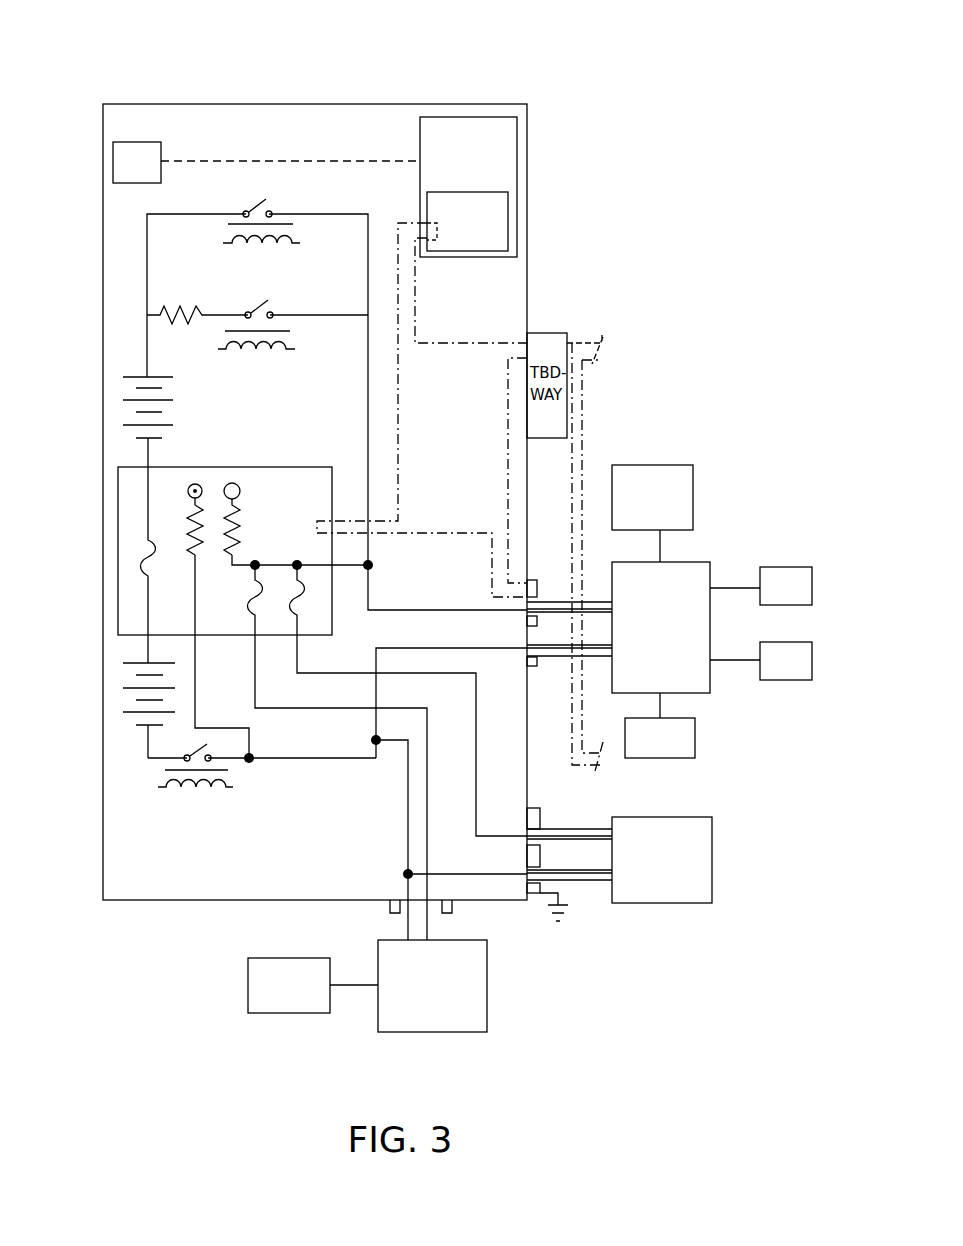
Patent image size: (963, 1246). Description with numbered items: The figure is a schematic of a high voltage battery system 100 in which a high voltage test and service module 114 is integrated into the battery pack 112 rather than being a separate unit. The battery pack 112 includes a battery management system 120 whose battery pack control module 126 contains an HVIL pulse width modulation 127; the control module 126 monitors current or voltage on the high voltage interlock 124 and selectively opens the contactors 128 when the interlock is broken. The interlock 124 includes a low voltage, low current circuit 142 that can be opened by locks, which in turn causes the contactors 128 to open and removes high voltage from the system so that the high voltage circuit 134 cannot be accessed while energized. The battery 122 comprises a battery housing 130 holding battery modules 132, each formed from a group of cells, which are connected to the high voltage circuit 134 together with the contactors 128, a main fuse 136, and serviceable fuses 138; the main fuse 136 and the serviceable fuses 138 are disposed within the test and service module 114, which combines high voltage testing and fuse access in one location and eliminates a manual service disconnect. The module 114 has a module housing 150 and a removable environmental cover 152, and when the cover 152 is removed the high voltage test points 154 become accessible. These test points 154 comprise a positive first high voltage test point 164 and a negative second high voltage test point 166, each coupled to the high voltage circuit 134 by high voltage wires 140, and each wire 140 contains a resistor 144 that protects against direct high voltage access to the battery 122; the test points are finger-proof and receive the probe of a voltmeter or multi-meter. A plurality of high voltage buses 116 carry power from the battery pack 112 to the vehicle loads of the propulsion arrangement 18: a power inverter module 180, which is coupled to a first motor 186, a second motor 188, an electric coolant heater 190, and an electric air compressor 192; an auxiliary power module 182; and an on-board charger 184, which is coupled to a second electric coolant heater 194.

The high voltage battery system 100 is at (90, 65).
The battery pack 112 is at (158, 92).
The battery management system 120 is at (113, 162).
The battery pack control module 126 is at (463, 117).
The HVIL pulse width modulation 127 is at (508, 234).
The battery housing 130 is at (103, 270).
The contactors 128 is at (218, 225).
The high voltage interlock 124 is at (476, 333).
The low voltage, low current circuit 142 is at (448, 343).
The battery modules 132 is at (185, 398).
The battery 122 is at (148, 566).
The high voltage test and service module 114 is at (104, 554).
The main fuse 136 is at (128, 588).
The module housing 150 is at (118, 503).
The removable environmental cover 152 is at (127, 533).
The negative second high voltage test point 166 is at (200, 482).
The positive first high voltage test point 164 is at (234, 482).
The resistor 144 is at (258, 500).
The high voltage test points 154 is at (246, 514).
The high voltage circuit 134 is at (368, 430).
The high voltage wires 140 is at (255, 586).
The serviceable fuses 138 is at (272, 584).
The high voltage buses 116 is at (552, 660).
The electric propulsion system 18 is at (712, 649).
The power inverter module 180 is at (700, 562).
The electric air compressor 192 is at (660, 465).
The first motor 186 is at (780, 567).
The second motor 188 is at (781, 681).
The electric coolant heater 190 is at (695, 738).
The auxiliary power module 182 is at (694, 817).
The on-board charger 184 is at (428, 1033).
The second electric coolant heater 194 is at (294, 1014).